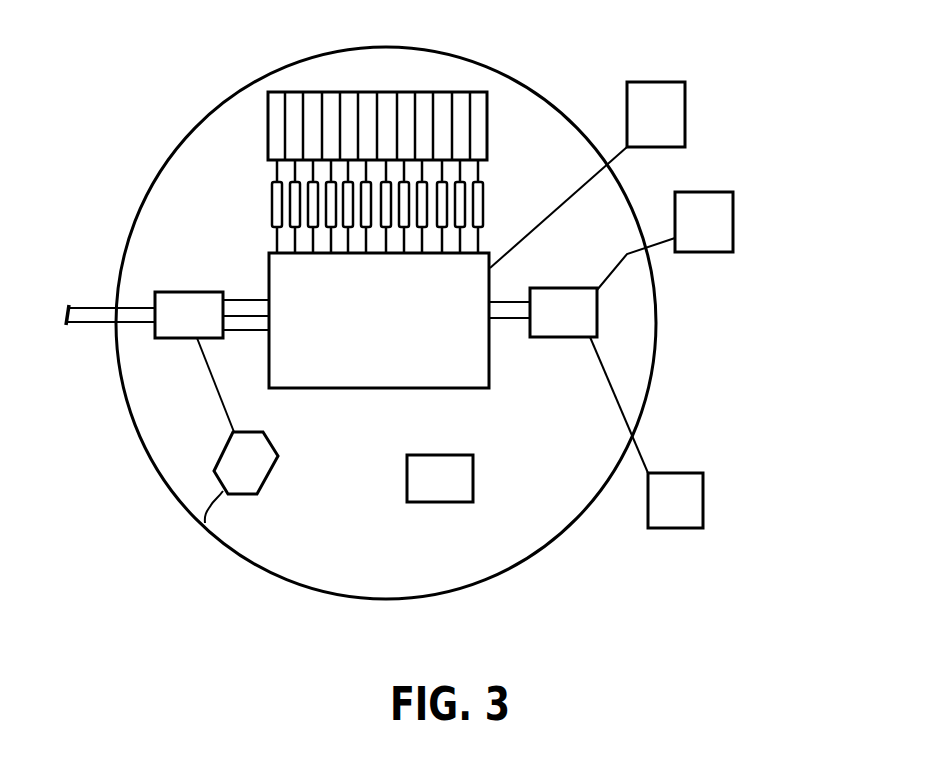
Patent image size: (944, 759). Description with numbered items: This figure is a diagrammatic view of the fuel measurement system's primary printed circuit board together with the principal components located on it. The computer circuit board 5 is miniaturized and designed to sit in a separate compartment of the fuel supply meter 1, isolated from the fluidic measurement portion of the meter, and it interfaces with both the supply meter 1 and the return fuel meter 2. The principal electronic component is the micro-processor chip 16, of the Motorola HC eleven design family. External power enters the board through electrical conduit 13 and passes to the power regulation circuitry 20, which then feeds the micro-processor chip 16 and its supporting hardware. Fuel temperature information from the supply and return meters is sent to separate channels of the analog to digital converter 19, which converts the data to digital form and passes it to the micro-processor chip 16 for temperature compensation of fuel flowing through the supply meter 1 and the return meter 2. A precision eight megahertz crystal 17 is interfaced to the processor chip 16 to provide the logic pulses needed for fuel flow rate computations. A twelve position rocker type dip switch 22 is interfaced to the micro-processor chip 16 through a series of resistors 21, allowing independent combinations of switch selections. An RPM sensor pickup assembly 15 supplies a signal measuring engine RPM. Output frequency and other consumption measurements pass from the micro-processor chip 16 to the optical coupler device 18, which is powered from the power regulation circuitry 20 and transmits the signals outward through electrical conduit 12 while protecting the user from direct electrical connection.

The fuel supply meter 1 is at (718, 239).
The return fuel meter 2 is at (687, 515).
The computer circuit board 5 is at (325, 532).
The electrical conduit 12 is at (66, 315).
The electrical conduit 13 is at (205, 523).
The RPM sensor pickup assembly 15 is at (668, 131).
The micro-processor chip 16 is at (391, 356).
The crystal 17 is at (453, 491).
The optical coupler device 18 is at (176, 324).
The analog to digital converter 19 is at (607, 322).
The power regulation circuitry 20 is at (234, 473).
The resistors 21 is at (272, 212).
The dip switch 22 is at (423, 92).